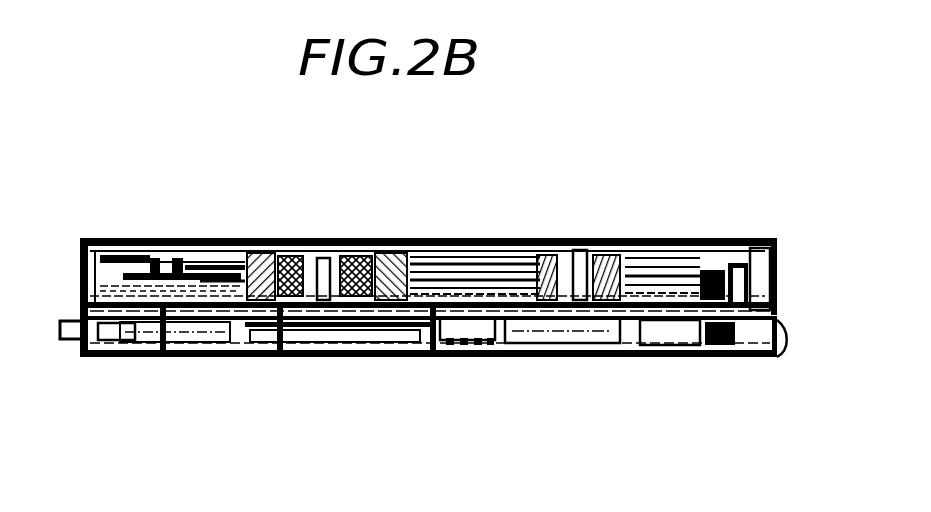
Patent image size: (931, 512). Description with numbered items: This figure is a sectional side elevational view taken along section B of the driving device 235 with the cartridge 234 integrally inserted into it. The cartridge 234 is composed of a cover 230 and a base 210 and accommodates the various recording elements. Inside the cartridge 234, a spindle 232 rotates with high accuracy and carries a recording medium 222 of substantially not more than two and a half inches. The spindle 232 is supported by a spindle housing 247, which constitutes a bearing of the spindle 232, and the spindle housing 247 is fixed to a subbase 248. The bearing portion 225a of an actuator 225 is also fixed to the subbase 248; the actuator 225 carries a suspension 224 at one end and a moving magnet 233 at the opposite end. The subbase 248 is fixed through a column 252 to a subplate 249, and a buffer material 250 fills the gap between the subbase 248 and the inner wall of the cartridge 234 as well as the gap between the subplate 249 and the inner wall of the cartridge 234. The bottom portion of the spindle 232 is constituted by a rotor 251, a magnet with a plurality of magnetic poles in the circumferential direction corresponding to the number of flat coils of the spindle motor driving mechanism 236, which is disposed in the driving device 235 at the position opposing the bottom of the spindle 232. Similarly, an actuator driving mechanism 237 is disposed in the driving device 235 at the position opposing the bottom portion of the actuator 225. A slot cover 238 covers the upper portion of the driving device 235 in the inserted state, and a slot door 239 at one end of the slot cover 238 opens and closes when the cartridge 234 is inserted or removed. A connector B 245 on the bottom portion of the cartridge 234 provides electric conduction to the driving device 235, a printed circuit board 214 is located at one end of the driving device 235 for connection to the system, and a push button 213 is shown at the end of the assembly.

The base 210 is at (725, 360).
The push button 213 is at (70, 340).
The printed circuit board 214 is at (737, 363).
The recording medium 222 is at (137, 238).
The suspension 224 is at (440, 238).
The actuator 225 is at (578, 240).
The bearing portion 225a is at (553, 240).
The cover 230 is at (642, 240).
The spindle 232 is at (300, 238).
The moving magnet 233 is at (667, 240).
The cartridge 234 is at (108, 238).
The driving device 235 is at (430, 340).
The spindle motor driving mechanism 236 is at (350, 332).
The actuator driving mechanism 237 is at (600, 358).
The slot cover 238 is at (784, 247).
The slot door 239 is at (163, 357).
The connector B 245 is at (787, 355).
The spindle housing 247 is at (405, 240).
The subbase 248 is at (255, 238).
The subplate 249 is at (218, 238).
The buffer material 250 is at (77, 283).
The rotor 251 is at (262, 358).
The column 252 is at (178, 238).
The section B— B is at (113, 357).